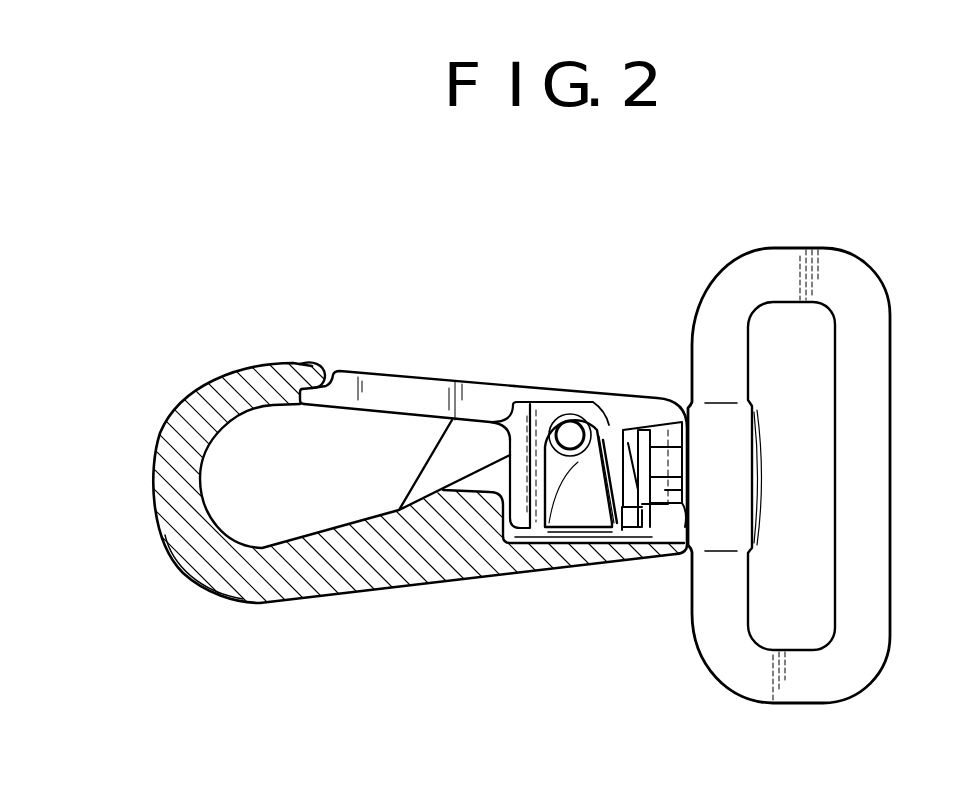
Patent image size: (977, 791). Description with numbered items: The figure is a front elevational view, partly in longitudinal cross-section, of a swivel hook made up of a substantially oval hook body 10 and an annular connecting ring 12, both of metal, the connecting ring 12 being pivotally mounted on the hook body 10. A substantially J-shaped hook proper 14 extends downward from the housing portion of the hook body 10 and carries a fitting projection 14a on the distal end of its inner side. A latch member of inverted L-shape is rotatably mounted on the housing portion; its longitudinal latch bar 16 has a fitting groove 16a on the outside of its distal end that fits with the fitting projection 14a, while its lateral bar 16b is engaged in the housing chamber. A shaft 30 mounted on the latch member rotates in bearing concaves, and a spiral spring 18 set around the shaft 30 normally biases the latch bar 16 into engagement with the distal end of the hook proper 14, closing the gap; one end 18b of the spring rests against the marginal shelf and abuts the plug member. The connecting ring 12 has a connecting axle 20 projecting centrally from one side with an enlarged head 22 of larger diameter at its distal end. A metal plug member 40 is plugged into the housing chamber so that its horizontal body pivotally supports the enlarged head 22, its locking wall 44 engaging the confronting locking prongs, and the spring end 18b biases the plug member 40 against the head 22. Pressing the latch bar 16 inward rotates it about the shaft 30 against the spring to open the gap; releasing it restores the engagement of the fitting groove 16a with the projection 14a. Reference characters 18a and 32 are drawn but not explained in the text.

The hook body 10 is at (529, 585).
The annular connecting ring 12 is at (893, 269).
The J-shaped hook proper 14 is at (257, 588).
The fitting projection 14a is at (317, 372).
The latch bar 16 is at (401, 376).
The fitting groove 16a is at (310, 402).
The lateral bar 16b is at (514, 410).
The spiral spring 18 is at (553, 412).
The casing side wall 18a is at (565, 547).
The end of the spiral spring 18b is at (612, 537).
The connecting axle 20 is at (670, 548).
The enlarged head 22 is at (643, 430).
The shaft 30 is at (569, 432).
The spring 32 is at (520, 518).
The plug member 40 is at (620, 398).
The locking wall 44 is at (637, 545).